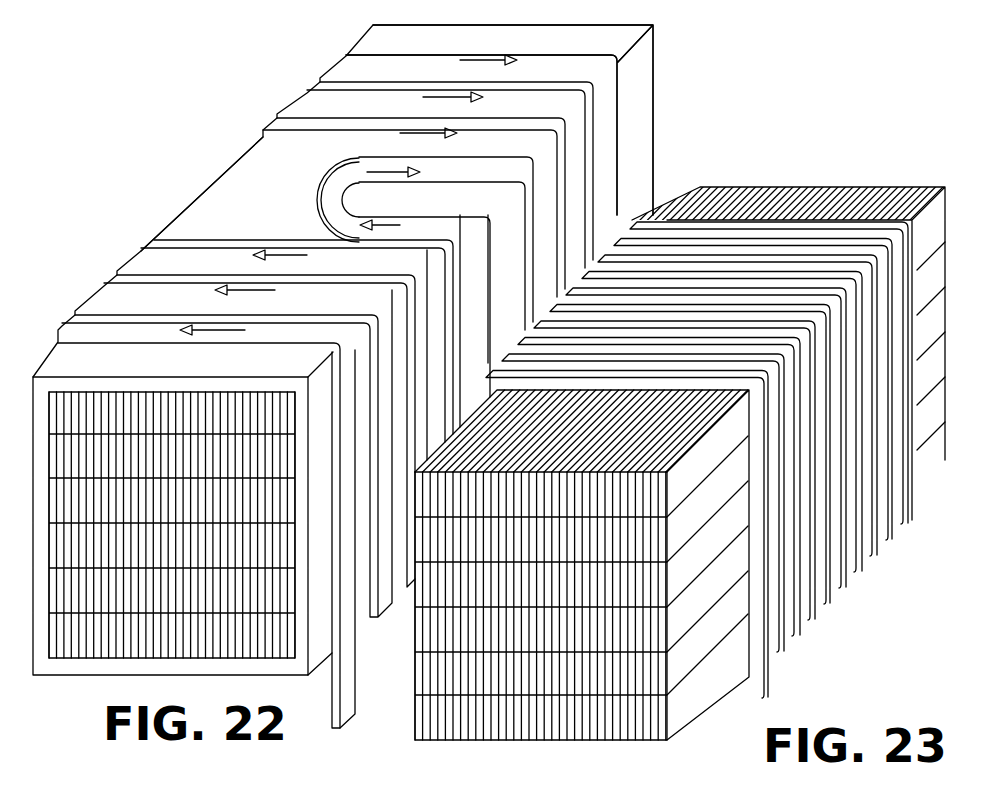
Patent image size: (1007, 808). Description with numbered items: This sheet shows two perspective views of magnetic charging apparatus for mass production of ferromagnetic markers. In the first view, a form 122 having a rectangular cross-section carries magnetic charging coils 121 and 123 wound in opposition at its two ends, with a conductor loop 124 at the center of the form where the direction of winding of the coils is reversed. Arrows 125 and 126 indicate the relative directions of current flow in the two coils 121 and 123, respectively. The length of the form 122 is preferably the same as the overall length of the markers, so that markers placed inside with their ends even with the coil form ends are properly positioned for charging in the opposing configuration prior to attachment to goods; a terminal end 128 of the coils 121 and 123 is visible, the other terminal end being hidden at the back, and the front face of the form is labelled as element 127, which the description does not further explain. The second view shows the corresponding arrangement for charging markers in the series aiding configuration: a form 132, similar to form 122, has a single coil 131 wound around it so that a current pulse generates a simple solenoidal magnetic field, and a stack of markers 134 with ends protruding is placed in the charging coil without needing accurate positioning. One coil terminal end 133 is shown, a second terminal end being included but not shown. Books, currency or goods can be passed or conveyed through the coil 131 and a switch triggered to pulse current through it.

In FIG. 22, the magnetic charging coil 121 is at (135, 285).
In FIG. 22, the form 122 is at (220, 203).
In FIG. 22, the magnetic charging coil 123 is at (330, 60).
In FIG. 22, the conductor loop 124 is at (320, 195).
In FIG. 22, the arrow 125 is at (288, 247).
In FIG. 22, the arrow 126 is at (380, 143).
In FIG. 22, the front grid face 127 is at (98, 423).
In FIG. 22, the terminal end 128 is at (347, 707).
In FIG. 23, the coil 131 is at (862, 586).
In FIG. 23, the form 132 is at (810, 636).
In FIG. 23, the coil terminal end 133 is at (778, 698).
In FIG. 23, the stack of markers 134 is at (438, 662).